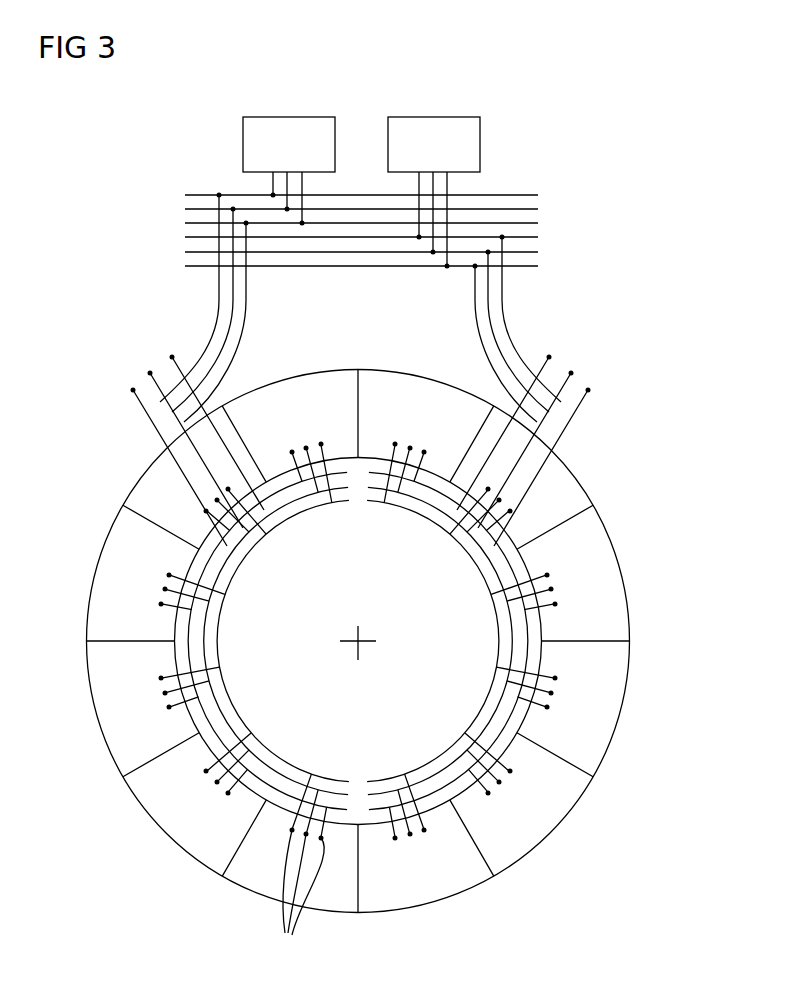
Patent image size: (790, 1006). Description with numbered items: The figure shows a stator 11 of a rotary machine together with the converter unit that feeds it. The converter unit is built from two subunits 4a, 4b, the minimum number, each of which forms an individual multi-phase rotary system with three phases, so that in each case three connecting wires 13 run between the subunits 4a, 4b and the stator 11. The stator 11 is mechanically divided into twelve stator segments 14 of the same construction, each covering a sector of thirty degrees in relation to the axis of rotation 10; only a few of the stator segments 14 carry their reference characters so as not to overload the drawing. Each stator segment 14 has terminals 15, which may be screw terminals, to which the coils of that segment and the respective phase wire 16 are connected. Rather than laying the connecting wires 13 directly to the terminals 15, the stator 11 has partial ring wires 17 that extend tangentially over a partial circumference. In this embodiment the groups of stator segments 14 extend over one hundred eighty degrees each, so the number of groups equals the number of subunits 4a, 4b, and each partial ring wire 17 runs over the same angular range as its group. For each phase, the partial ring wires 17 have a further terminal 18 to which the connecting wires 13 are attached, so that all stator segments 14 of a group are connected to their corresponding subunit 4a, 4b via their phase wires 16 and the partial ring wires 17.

The subunit 4a is at (290, 117).
The subunit 4b is at (430, 117).
The axis of rotation 10 is at (358, 628).
The stator 11 is at (374, 671).
The connecting wires 13 is at (246, 330).
The stator segment 14 is at (603, 720).
The terminals 15 is at (161, 604).
The phase wires 16 is at (300, 900).
The partial ring wires 17 is at (221, 660).
The further terminal 18 is at (184, 422).